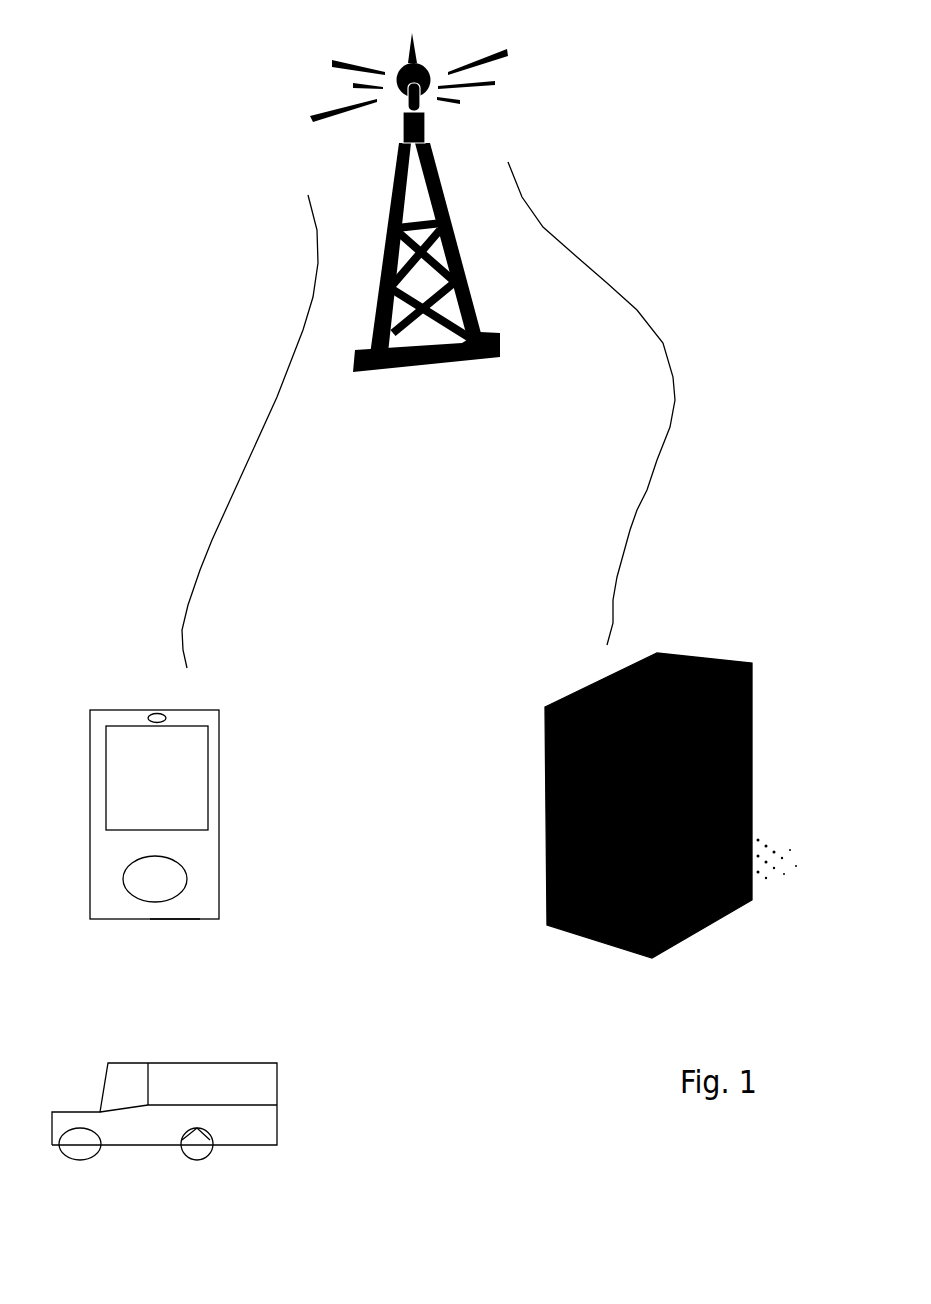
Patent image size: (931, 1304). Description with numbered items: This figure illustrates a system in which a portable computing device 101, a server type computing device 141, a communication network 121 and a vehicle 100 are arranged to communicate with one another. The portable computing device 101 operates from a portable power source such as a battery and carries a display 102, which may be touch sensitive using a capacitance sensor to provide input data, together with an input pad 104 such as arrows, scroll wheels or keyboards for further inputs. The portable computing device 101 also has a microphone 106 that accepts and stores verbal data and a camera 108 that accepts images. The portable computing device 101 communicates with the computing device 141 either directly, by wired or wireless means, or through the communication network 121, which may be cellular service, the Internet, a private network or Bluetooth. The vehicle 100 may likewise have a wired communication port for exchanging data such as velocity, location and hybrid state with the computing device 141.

The vehicle 100 is at (278, 1105).
The portable computing device 101 is at (122, 710).
The display 102 is at (208, 824).
The input pad 104 is at (178, 895).
The microphone 106 is at (170, 920).
The camera 108 is at (163, 715).
The communication network 121 is at (308, 65).
The computing device 141 is at (668, 682).